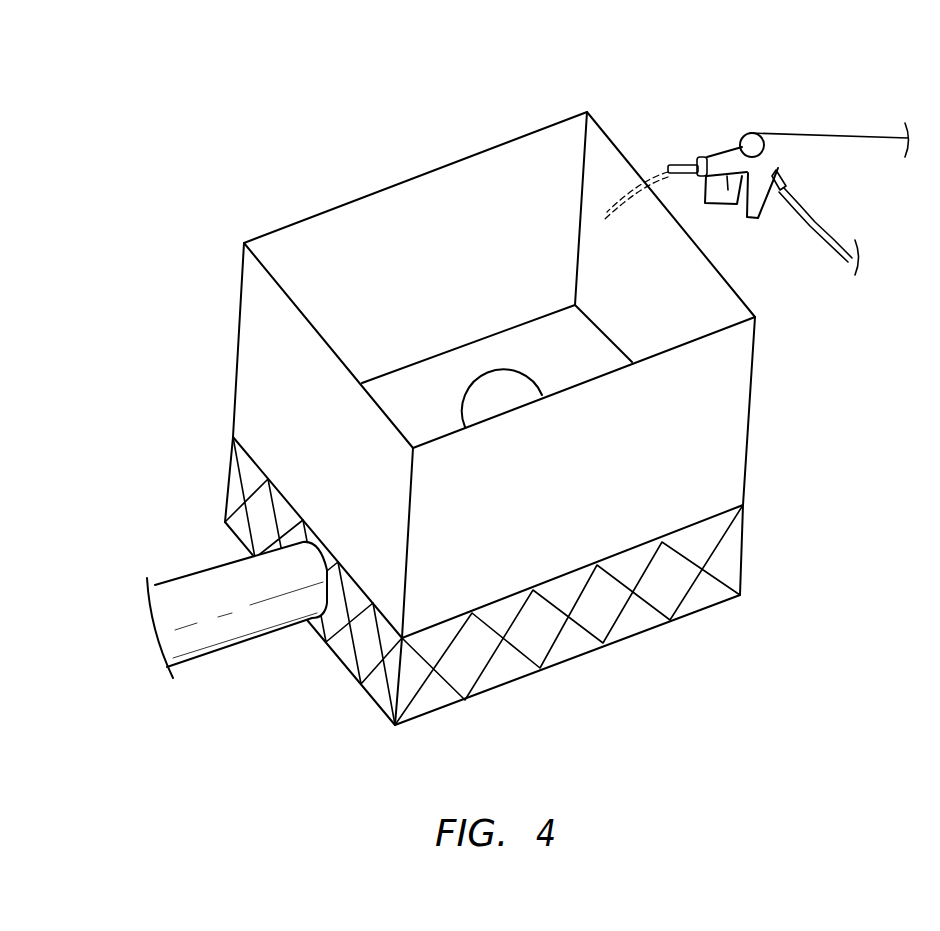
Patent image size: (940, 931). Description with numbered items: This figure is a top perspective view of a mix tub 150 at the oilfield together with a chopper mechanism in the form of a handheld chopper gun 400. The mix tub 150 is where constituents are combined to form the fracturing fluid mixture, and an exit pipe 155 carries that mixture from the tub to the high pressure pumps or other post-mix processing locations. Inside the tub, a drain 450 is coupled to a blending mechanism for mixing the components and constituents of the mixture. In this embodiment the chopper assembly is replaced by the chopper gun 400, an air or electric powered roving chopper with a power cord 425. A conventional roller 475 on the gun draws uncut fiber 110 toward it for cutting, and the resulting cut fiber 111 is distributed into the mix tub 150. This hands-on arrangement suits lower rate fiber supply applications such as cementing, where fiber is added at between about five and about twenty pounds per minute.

The mix tub 150 is at (281, 118).
The exit pipe 155 is at (212, 635).
The drain 450 is at (492, 398).
The chopper gun 400 is at (718, 132).
The roller 475 is at (765, 146).
The uncut fiber 110 is at (832, 137).
The cut fiber 111 is at (652, 153).
The power cord 425 is at (823, 233).